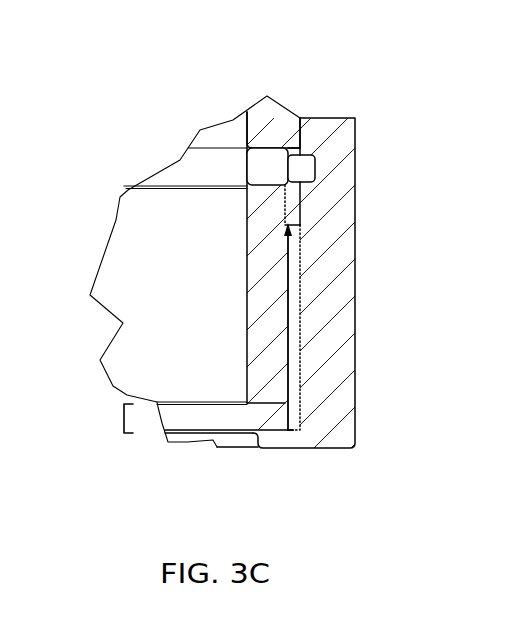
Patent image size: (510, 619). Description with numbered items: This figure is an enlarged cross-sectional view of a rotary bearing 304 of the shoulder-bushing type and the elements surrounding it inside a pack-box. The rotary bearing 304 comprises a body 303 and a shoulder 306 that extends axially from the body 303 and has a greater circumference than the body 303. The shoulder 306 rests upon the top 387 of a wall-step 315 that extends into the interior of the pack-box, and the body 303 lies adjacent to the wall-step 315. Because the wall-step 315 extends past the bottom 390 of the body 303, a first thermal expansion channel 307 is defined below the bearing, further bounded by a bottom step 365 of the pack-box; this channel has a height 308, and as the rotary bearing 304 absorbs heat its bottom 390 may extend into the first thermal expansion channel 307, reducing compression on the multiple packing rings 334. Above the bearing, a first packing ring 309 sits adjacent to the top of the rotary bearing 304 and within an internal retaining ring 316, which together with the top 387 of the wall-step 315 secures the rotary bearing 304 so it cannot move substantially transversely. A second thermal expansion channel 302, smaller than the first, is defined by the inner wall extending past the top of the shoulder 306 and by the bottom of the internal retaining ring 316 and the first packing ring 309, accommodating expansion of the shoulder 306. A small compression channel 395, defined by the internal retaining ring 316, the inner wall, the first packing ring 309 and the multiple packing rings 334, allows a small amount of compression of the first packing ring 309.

The second thermal expansion channel 302 is at (298, 185).
The body 303 is at (263, 290).
The rotary bearing 304 is at (172, 356).
The shoulder 306 is at (293, 207).
The first thermal expansion channel 307 is at (198, 410).
The height 308 is at (122, 420).
The first packing ring 309 is at (315, 102).
The wall-step 315 is at (291, 408).
The internal retaining ring 316 is at (300, 167).
The multiple packing rings 334 is at (258, 120).
The bottom step 365 is at (268, 432).
The top 387 is at (350, 326).
The bottom 390 is at (250, 403).
The small compression channel 395 is at (293, 152).